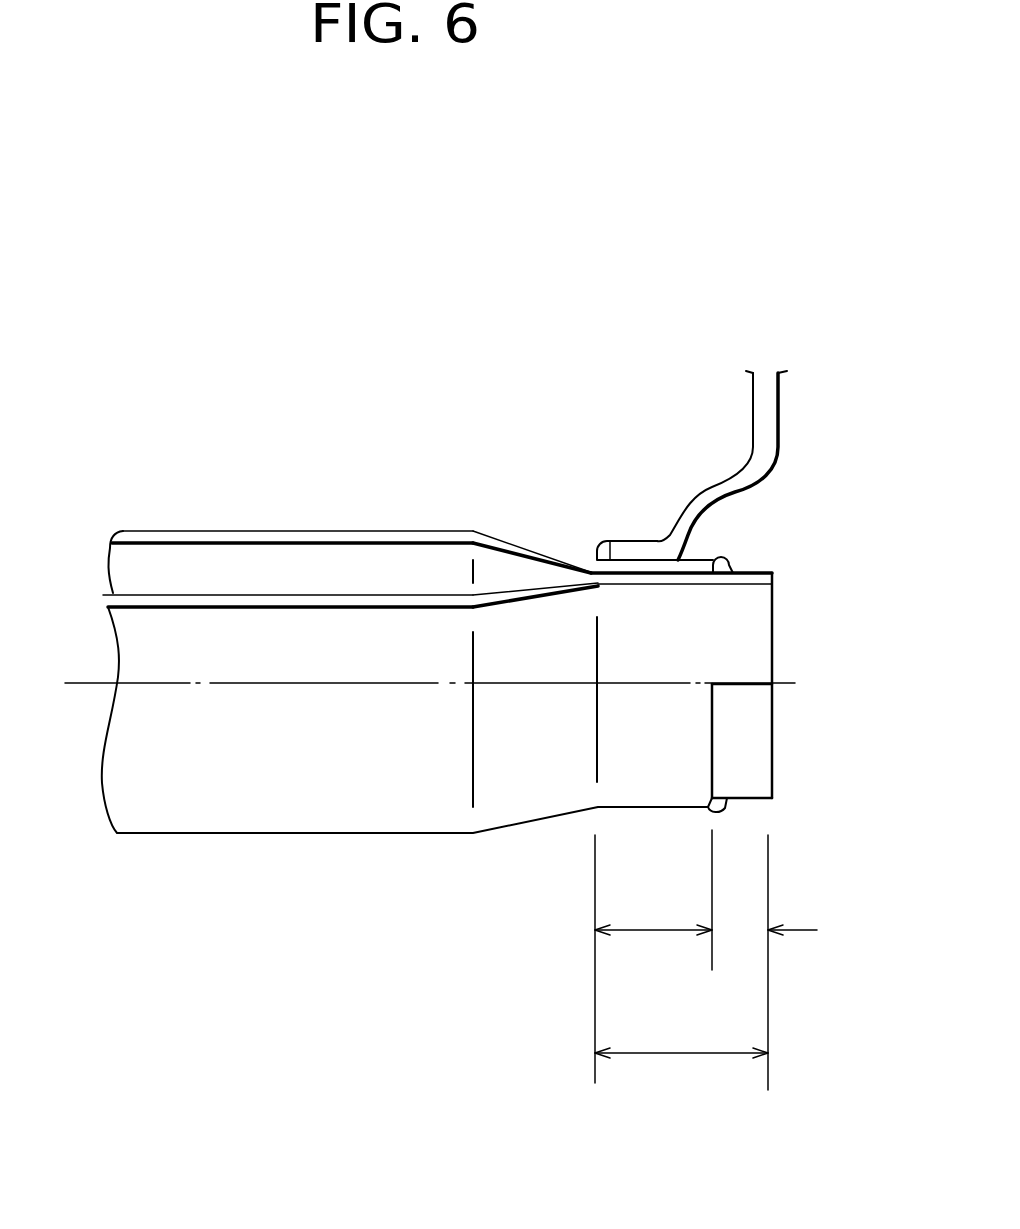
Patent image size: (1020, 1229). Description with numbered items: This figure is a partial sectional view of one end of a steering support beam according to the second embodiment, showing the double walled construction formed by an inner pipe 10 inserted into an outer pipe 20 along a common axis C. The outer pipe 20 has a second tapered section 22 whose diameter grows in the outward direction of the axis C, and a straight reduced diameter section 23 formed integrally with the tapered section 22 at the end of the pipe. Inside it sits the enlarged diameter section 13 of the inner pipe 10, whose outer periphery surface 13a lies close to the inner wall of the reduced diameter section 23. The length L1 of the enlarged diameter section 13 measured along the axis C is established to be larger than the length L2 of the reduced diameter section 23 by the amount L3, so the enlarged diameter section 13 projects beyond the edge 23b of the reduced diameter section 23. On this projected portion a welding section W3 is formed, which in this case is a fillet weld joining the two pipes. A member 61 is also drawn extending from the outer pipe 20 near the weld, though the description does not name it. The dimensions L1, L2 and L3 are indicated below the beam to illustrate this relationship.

The inner pipe 10 is at (235, 592).
The outer pipe 20 is at (158, 528).
The second tapered section 22 is at (515, 547).
The reduced diameter section 23 is at (643, 558).
The edge of the reduced diameter section 23b is at (713, 730).
The enlarged diameter section 13 is at (693, 585).
The outer periphery surface 13a is at (747, 760).
The lead wire 61 is at (772, 403).
The welding section W3 is at (737, 560).
The axis C is at (150, 683).
The length of the enlarged diameter section L1 is at (681, 1033).
The length of the reduced diameter section L2 is at (653, 956).
The difference in length L3 is at (768, 962).